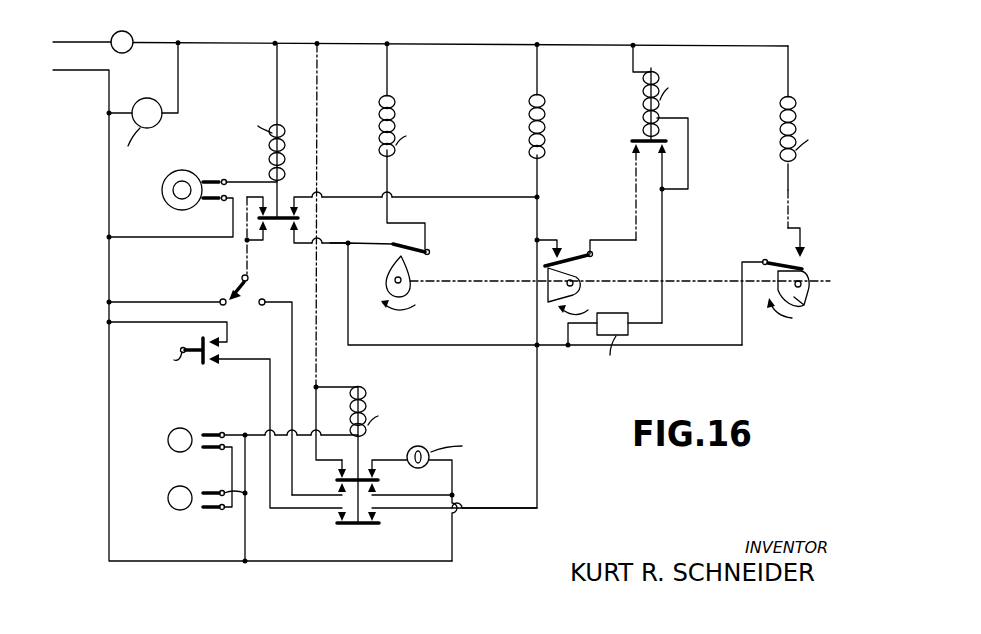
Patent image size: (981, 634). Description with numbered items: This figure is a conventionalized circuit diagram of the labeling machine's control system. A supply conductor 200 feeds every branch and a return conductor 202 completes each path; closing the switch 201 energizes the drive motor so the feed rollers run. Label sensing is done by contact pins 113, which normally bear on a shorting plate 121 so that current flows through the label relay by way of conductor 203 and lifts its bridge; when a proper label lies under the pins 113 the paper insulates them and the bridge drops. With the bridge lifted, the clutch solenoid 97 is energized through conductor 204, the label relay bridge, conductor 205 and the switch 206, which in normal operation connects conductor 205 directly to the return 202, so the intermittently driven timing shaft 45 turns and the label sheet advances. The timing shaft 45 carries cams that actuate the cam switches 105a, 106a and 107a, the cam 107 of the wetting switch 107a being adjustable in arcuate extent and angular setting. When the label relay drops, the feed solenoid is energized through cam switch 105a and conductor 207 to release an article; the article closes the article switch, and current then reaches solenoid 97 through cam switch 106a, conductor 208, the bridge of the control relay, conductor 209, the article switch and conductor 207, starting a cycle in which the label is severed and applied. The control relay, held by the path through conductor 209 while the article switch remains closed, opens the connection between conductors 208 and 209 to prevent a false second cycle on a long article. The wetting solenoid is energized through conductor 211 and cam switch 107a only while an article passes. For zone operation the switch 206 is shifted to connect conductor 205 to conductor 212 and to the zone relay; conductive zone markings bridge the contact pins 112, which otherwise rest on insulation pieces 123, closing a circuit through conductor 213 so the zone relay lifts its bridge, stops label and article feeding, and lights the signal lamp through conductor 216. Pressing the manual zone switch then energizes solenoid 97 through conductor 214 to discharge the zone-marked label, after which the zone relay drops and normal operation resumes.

The supply conductor 200 is at (238, 43).
The switch 201 is at (133, 31).
The return conductor 202 is at (100, 142).
The conductor 203 is at (250, 182).
The conductor 204 is at (537, 218).
The conductor 205 is at (249, 249).
The switch 206 is at (178, 285).
The conductor 207 is at (340, 241).
The conductor 208 is at (636, 206).
The conductor 209 is at (688, 180).
The conductor 211 is at (790, 190).
The conductor 212 is at (292, 331).
The conductor 213 is at (258, 433).
The conductor 214 is at (243, 362).
The conductor 216 is at (395, 455).
The clutch solenoid 97 is at (546, 145).
The timing shaft 45 is at (672, 283).
The cam switch 105a is at (427, 277).
The cam switch 106a is at (587, 277).
The cam switch 107a is at (802, 301).
The cam 107 is at (800, 308).
The contact pins 112 is at (215, 431).
The contact pins 113 is at (216, 178).
The shorting plate 121 is at (173, 190).
The insulation pieces 123 is at (171, 449).